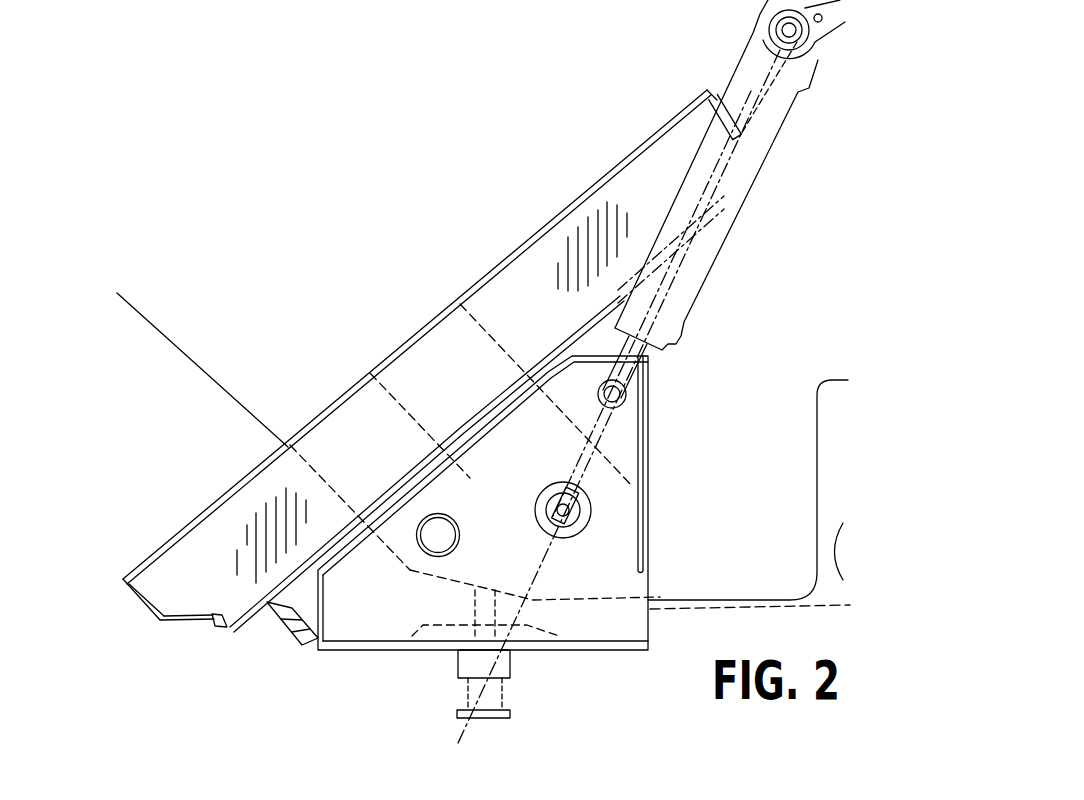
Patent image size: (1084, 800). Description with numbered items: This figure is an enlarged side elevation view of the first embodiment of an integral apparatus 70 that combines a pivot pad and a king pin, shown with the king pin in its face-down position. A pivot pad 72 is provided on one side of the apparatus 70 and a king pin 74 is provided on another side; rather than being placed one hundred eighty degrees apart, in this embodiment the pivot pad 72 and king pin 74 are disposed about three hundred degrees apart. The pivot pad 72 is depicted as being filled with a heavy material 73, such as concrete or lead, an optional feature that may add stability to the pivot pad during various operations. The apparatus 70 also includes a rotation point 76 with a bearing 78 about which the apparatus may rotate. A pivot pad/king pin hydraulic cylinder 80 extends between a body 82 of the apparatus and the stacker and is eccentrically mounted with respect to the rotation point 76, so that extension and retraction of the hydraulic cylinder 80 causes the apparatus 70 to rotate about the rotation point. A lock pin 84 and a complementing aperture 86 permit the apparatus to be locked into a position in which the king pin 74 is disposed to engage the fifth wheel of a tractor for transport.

The apparatus 70 is at (104, 606).
The pivot pad 72 is at (217, 503).
The heavy material 73 is at (532, 275).
The king pin 74 is at (500, 694).
The rotation point 76 is at (600, 509).
The bearing 78 is at (579, 539).
The pivot pad/king pin hydraulic cylinder 80 is at (702, 272).
The body 82 is at (650, 433).
The lock pin 84 is at (425, 552).
The aperture 86 is at (430, 519).